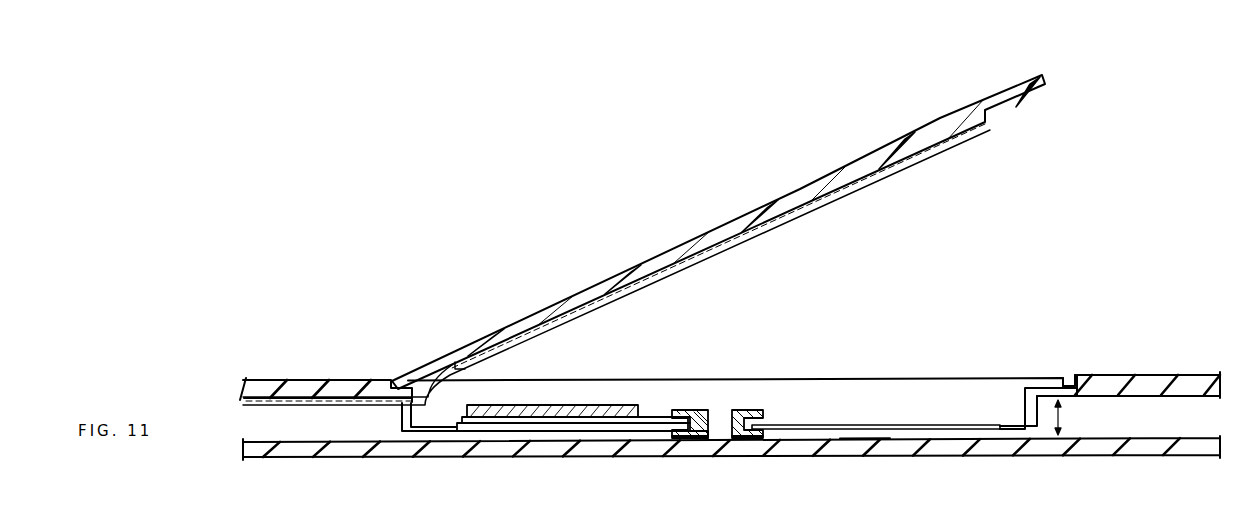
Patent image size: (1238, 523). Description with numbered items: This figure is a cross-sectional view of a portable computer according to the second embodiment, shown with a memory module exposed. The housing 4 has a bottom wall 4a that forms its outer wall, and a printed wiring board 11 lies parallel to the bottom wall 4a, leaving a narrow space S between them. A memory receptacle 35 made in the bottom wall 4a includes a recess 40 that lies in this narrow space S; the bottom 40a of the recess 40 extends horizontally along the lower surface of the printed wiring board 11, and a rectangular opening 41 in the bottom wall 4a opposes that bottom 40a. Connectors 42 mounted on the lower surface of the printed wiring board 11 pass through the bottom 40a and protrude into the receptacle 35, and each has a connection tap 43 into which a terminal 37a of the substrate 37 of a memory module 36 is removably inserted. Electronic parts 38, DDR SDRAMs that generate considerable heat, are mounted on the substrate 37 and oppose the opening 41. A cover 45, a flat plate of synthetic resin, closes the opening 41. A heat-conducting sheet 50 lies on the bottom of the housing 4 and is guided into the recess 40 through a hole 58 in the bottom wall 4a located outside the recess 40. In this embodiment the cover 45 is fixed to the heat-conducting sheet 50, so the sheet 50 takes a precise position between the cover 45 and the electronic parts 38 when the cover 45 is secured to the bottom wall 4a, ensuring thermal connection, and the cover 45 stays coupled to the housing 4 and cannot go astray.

The housing 4 is at (1165, 375).
The bottom wall 4a is at (282, 393).
The printed wiring board 11 is at (285, 453).
The memory receptacle 35 is at (812, 424).
The memory module 36 is at (463, 433).
The substrate 37 is at (568, 432).
The terminals 37a is at (689, 440).
The electronic parts 38 is at (580, 405).
The recess 40 is at (1012, 403).
The bottom of the recess 40a is at (863, 454).
The opening 41 is at (1065, 380).
The connectors 42 is at (707, 445).
The connection tap 43 is at (686, 410).
The cover 45 is at (815, 192).
The heat-conducting sheet 50 is at (738, 242).
The hole 58 is at (397, 407).
The narrow space S is at (1068, 418).